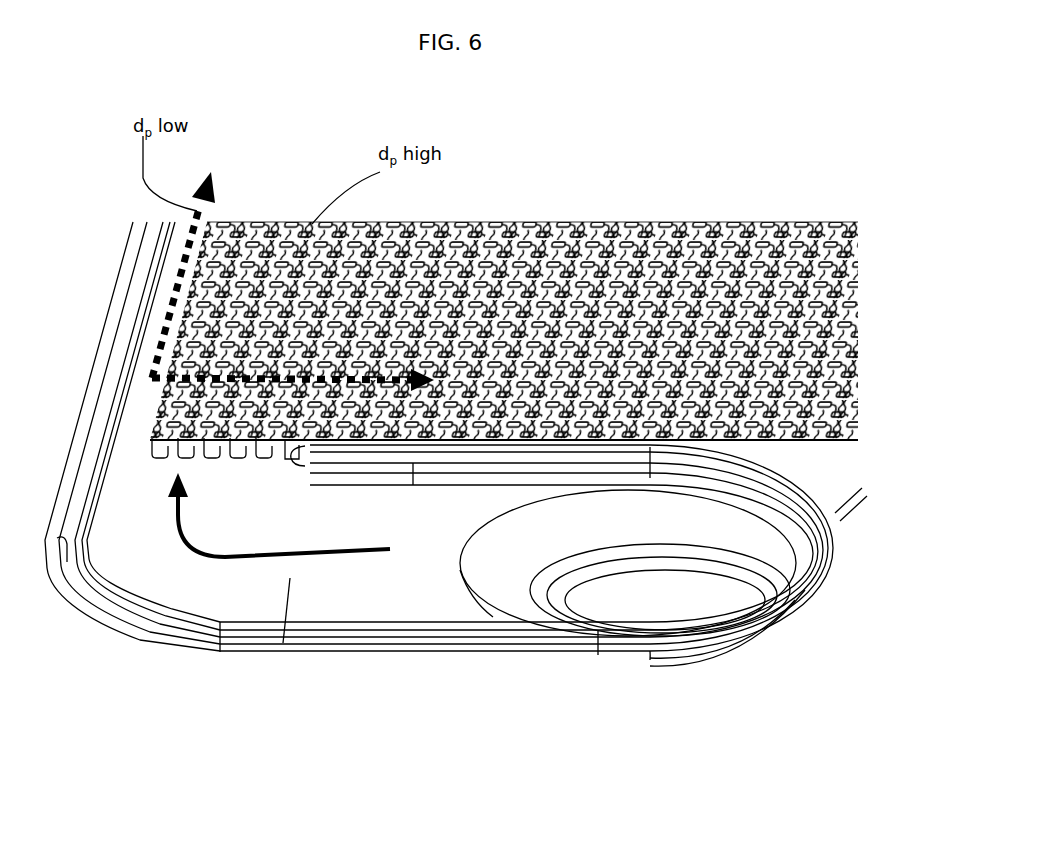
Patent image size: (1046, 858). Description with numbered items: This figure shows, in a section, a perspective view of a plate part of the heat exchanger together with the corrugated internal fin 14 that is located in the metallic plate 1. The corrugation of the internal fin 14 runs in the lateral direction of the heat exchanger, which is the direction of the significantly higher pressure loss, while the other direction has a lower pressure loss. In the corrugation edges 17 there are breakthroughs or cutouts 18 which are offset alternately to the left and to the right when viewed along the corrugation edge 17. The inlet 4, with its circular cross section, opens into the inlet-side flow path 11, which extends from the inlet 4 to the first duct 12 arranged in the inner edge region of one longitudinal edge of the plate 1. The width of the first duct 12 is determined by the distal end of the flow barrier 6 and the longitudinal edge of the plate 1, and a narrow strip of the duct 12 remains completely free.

The metallic plate 1 is at (395, 657).
The inlet 4 is at (607, 686).
The flow barrier 6 is at (385, 452).
The flow path 11 is at (270, 655).
The first duct 12 is at (170, 462).
The corrugated internal fin 14 is at (583, 223).
The corrugation edge 17 is at (210, 445).
The breakthrough 18 is at (833, 520).